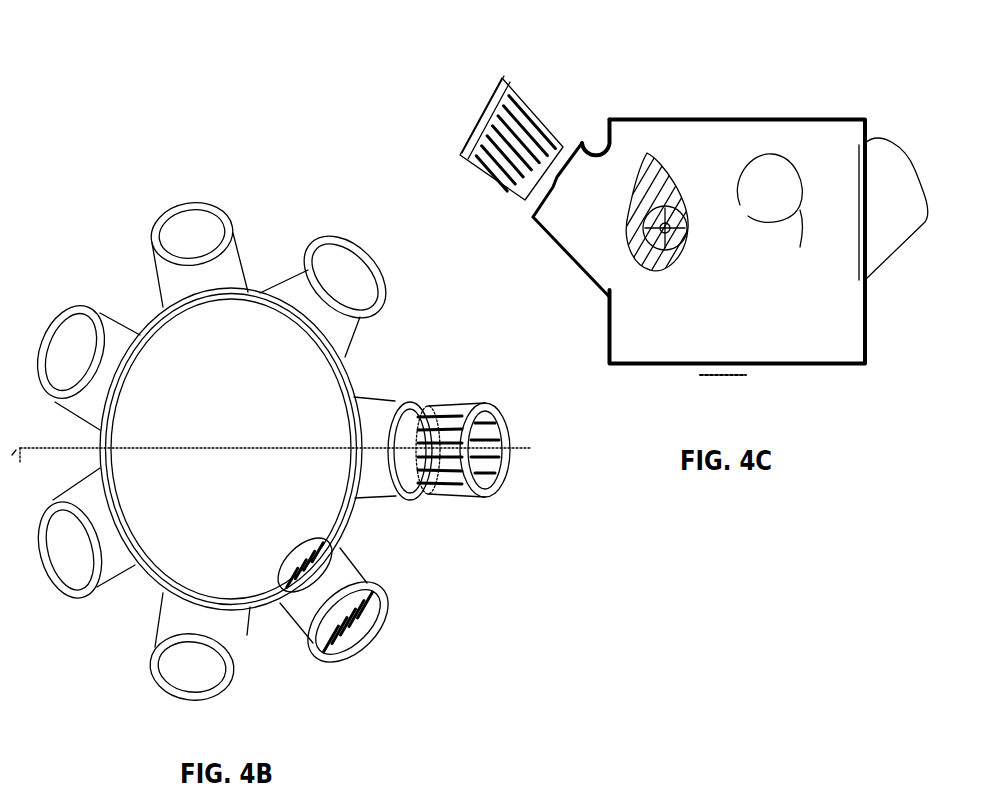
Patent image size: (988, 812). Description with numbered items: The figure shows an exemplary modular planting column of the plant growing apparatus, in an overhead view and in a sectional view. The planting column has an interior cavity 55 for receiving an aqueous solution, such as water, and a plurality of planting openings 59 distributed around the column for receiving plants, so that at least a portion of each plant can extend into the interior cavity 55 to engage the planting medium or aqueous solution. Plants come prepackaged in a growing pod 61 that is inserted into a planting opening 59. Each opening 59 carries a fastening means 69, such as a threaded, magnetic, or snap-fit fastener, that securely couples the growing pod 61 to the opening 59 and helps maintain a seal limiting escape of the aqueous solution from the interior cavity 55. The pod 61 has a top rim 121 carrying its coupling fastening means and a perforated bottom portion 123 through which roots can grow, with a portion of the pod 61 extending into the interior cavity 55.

In FIG. 4B, the interior cavity 55 is at (157, 363).
In FIG. 4C, the interior cavity 55 is at (708, 162).
In FIG. 4B, the planting opening 59 is at (367, 283).
In FIG. 4B, the growing pod 61 is at (493, 497).
In FIG. 4C, the growing pod 61 is at (470, 143).
In FIG. 4B, the fastening means 69 is at (413, 498).
In FIG. 4C, the fastening means 69 is at (550, 183).
In FIG. 4C, the top rim 121 is at (507, 92).
In FIG. 4C, the bottom portion 123 is at (540, 120).